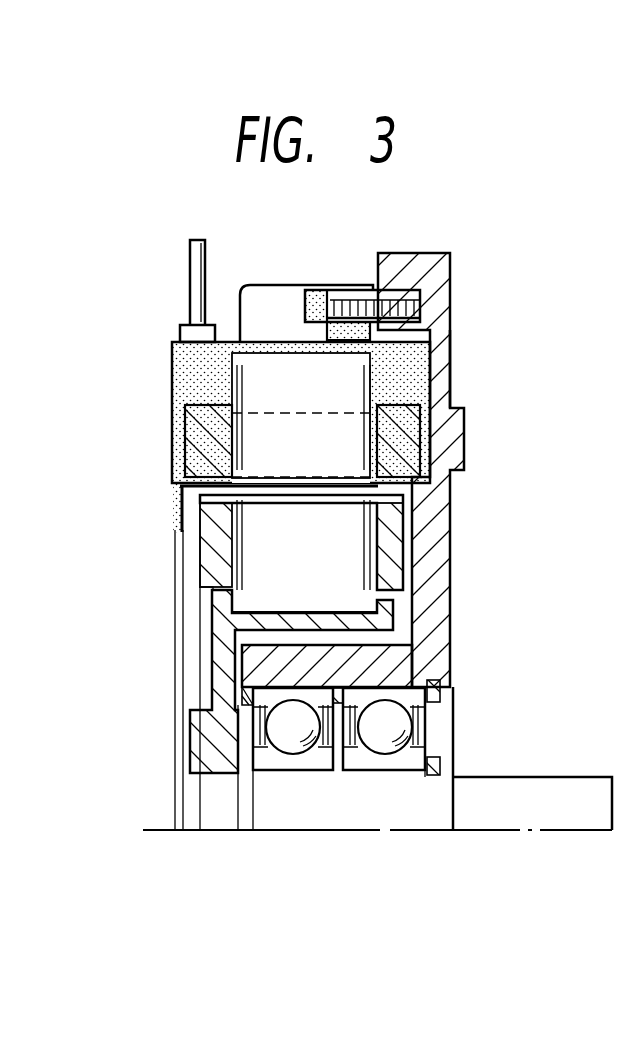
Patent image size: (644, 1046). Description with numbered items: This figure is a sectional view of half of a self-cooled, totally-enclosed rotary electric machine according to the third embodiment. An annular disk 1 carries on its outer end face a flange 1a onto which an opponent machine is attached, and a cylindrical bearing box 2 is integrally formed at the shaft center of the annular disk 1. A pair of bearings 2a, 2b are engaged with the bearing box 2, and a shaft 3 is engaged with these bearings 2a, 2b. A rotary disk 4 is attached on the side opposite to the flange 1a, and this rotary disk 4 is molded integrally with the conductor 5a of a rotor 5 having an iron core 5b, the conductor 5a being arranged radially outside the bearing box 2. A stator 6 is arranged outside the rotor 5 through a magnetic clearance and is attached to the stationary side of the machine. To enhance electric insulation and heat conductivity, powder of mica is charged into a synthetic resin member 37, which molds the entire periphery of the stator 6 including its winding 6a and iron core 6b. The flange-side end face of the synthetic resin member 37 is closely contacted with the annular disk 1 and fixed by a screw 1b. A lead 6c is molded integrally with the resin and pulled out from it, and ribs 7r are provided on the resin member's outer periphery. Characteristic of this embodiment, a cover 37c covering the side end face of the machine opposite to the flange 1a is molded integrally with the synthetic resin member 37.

The annular disk 1 is at (440, 543).
The flange 1a is at (452, 360).
The screw 1b is at (318, 312).
The bearing box 2 is at (385, 655).
The bearing 2a is at (385, 752).
The bearing 2b is at (295, 752).
The shaft 3 is at (528, 790).
The rotary disk 4 is at (213, 643).
The rotor 5 is at (230, 573).
The conductor 5a is at (213, 555).
The iron core 5b is at (240, 597).
The stator 6 is at (378, 422).
The winding 6a is at (407, 445).
The iron core 6b is at (347, 388).
The lead 6c is at (190, 266).
The ribs 7r is at (260, 305).
The synthetic resin member 37 is at (172, 366).
The cover 37c is at (178, 512).